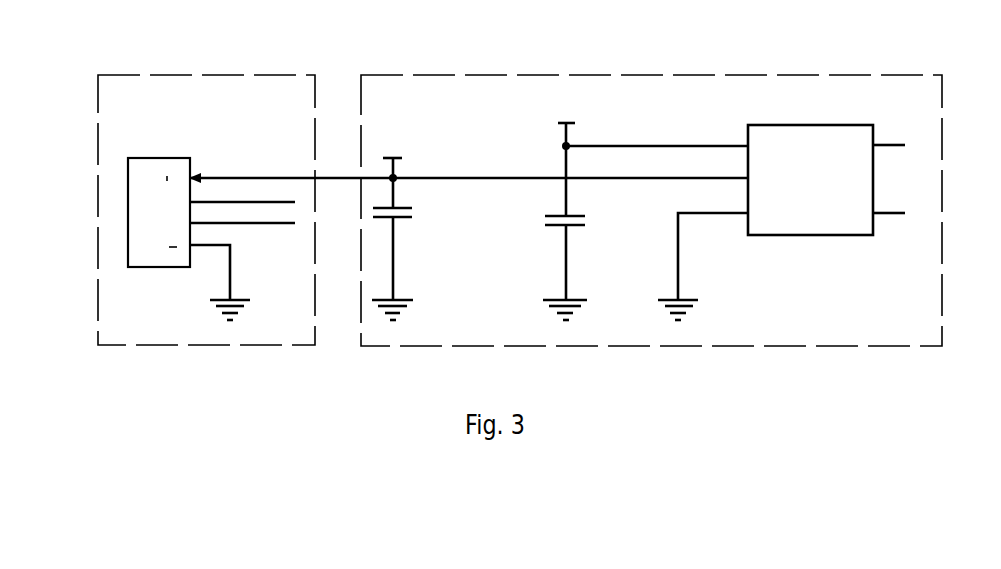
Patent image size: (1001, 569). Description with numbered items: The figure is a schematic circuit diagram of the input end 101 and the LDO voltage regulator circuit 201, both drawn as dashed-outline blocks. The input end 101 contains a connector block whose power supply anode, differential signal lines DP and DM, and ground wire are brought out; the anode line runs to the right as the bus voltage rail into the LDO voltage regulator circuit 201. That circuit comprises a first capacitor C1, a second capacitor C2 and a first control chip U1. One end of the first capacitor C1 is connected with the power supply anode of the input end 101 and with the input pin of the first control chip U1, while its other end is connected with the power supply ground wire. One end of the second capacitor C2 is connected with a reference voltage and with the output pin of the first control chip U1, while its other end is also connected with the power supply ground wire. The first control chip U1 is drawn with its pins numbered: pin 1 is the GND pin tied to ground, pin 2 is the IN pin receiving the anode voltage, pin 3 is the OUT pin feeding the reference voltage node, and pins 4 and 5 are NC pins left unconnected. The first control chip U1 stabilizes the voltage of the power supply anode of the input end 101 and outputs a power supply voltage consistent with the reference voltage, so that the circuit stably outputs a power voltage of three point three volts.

The input end 101 is at (98, 182).
The LDO voltage regulator circuit 201 is at (543, 75).
The first capacitor C1 is at (409, 229).
The second capacitor C2 is at (645, 212).
The first control chip U1 is at (781, 202).
The GND pin of U1 1 is at (722, 257).
The IN pin of U1 2 is at (750, 175).
The OUT pin of U1 3 is at (755, 142).
The NC pin of U1 4 is at (870, 142).
The NC pin of U1 5 is at (870, 209).